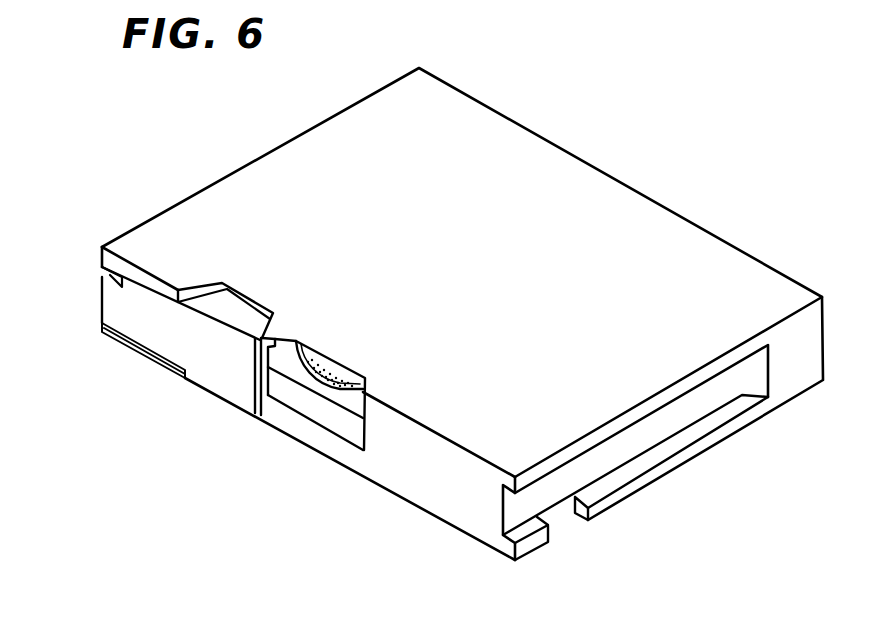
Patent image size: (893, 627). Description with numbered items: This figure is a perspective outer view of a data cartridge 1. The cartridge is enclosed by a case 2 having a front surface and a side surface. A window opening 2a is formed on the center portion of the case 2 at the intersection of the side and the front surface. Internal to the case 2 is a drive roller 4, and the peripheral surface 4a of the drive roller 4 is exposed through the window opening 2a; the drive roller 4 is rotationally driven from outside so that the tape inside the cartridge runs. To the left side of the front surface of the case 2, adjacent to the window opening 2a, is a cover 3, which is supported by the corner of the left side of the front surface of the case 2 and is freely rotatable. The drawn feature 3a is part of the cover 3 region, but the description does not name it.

The data cartridge 1 is at (588, 85).
The case 2 is at (650, 224).
The window opening 2a is at (285, 355).
The cover 3 is at (215, 373).
The engaging projection 3a is at (112, 302).
The drive roller 4 is at (322, 365).
The peripheral surface 4a is at (357, 388).